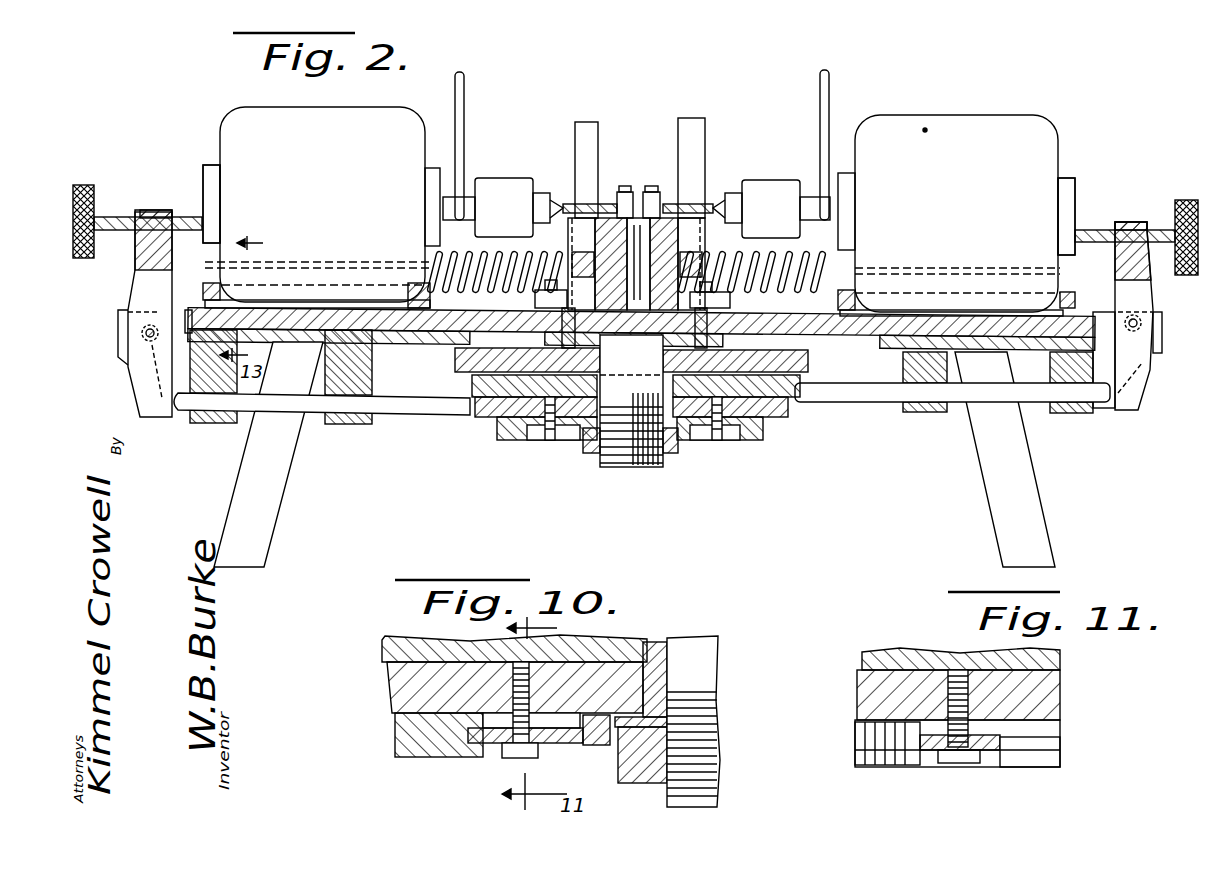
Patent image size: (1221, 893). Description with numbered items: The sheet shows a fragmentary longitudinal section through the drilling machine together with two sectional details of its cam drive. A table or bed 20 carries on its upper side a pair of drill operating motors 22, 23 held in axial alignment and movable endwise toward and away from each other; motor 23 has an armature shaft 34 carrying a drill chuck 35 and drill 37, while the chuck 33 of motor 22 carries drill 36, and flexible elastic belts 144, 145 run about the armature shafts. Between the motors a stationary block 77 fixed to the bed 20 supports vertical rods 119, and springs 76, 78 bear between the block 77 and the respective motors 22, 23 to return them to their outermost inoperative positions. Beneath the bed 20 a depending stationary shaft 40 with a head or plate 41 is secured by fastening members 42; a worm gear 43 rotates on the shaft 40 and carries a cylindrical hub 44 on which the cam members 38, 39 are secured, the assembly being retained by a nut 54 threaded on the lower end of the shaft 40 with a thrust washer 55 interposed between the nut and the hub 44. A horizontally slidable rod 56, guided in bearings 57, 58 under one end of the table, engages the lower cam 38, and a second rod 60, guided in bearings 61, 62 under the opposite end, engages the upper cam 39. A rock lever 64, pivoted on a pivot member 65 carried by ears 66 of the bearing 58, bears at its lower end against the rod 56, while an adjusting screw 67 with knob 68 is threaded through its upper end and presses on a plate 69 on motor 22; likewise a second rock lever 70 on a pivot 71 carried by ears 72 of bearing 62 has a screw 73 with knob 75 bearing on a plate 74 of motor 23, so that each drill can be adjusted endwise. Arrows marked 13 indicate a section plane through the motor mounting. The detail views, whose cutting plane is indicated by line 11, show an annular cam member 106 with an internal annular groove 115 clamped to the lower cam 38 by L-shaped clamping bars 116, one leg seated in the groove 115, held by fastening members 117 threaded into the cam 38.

In FIG. 2, the table or bed 20 is at (862, 338).
In FIG. 2, the head or plate 41 is at (745, 348).
In FIG. 2, the drill operating motor 22 is at (335, 117).
In FIG. 2, the drill operating motor 23 is at (970, 113).
In FIG. 2, the hand wheel or knob 68 is at (88, 183).
In FIG. 2, the motor adjusting member 67 is at (120, 216).
In FIG. 2, the plate 69 is at (202, 178).
In FIG. 2, the rock lever 64 is at (135, 297).
In FIG. 2, the ears or arms 66 is at (120, 338).
In FIG. 2, the pivot member 65 is at (152, 342).
In FIG. 2, the knob or wheel 75 is at (1187, 200).
In FIG. 2, the adjustable screw 73 is at (1103, 228).
In FIG. 2, the plate 74 is at (1078, 178).
In FIG. 2, the rock lever 70 is at (1138, 392).
In FIG. 2, the pivot 71 is at (1140, 323).
In FIG. 2, the ears or arms 72 is at (1160, 352).
In FIG. 2, the flexible and elastic belt 144 is at (466, 100).
In FIG. 2, the flexible and elastic belt 145 is at (831, 96).
In FIG. 2, the drill chuck 33 is at (497, 180).
In FIG. 2, the drill chuck 35 is at (778, 182).
In FIG. 2, the drill 36 is at (587, 197).
In FIG. 2, the vertical supporting rods 119 is at (700, 141).
In FIG. 2, the drill 37 is at (690, 207).
In FIG. 2, the armature shaft 34 is at (835, 208).
In FIG. 2, the stationary block 77 is at (578, 243).
In FIG. 2, the spring 76 is at (478, 277).
In FIG. 2, the fastening members 42 is at (738, 332).
In FIG. 2, the spring 78 is at (790, 292).
In FIG. 2, the section line 13 is at (257, 292).
In FIG. 2, the bearing 58 is at (218, 425).
In FIG. 2, the bearing 57 is at (352, 427).
In FIG. 2, the horizontally slidable plunger or elongated rod 56 is at (283, 405).
In FIG. 2, the bearing 61 is at (925, 418).
In FIG. 2, the bearing 62 is at (1078, 418).
In FIG. 2, the second horizontally slidable plunger or rod 60 is at (1000, 393).
In FIG. 2, the worm gear 43 is at (500, 403).
In FIG. 2, the cam member 39 is at (790, 400).
In FIG. 10, the cam member 39 is at (390, 650).
In FIG. 11, the cam member 39 is at (1060, 658).
In FIG. 2, the cylindrical hub 44 is at (507, 370).
In FIG. 10, the cylindrical hub 44 is at (658, 647).
In FIG. 2, the cam member 38 is at (780, 428).
In FIG. 10, the cam member 38 is at (403, 692).
In FIG. 11, the cam member 38 is at (1043, 695).
In FIG. 2, the cam member 106 is at (747, 442).
In FIG. 10, the cam member 106 is at (417, 758).
In FIG. 11, the cam member 106 is at (1050, 763).
In FIG. 2, the thrust washer 55 is at (582, 418).
In FIG. 10, the thrust washer 55 is at (613, 720).
In FIG. 2, the depending stationary shaft 40 is at (660, 460).
In FIG. 10, the depending stationary shaft 40 is at (707, 668).
In FIG. 2, the nut 54 is at (592, 450).
In FIG. 10, the nut 54 is at (633, 783).
In FIG. 10, the section line 11 is at (546, 713).
In FIG. 10, the annular groove 115 is at (475, 753).
In FIG. 10, the fastening members 117 is at (523, 757).
In FIG. 11, the fastening members 117 is at (973, 757).
In FIG. 10, the clamping bars 116 is at (565, 747).
In FIG. 11, the clamping bars 116 is at (930, 752).